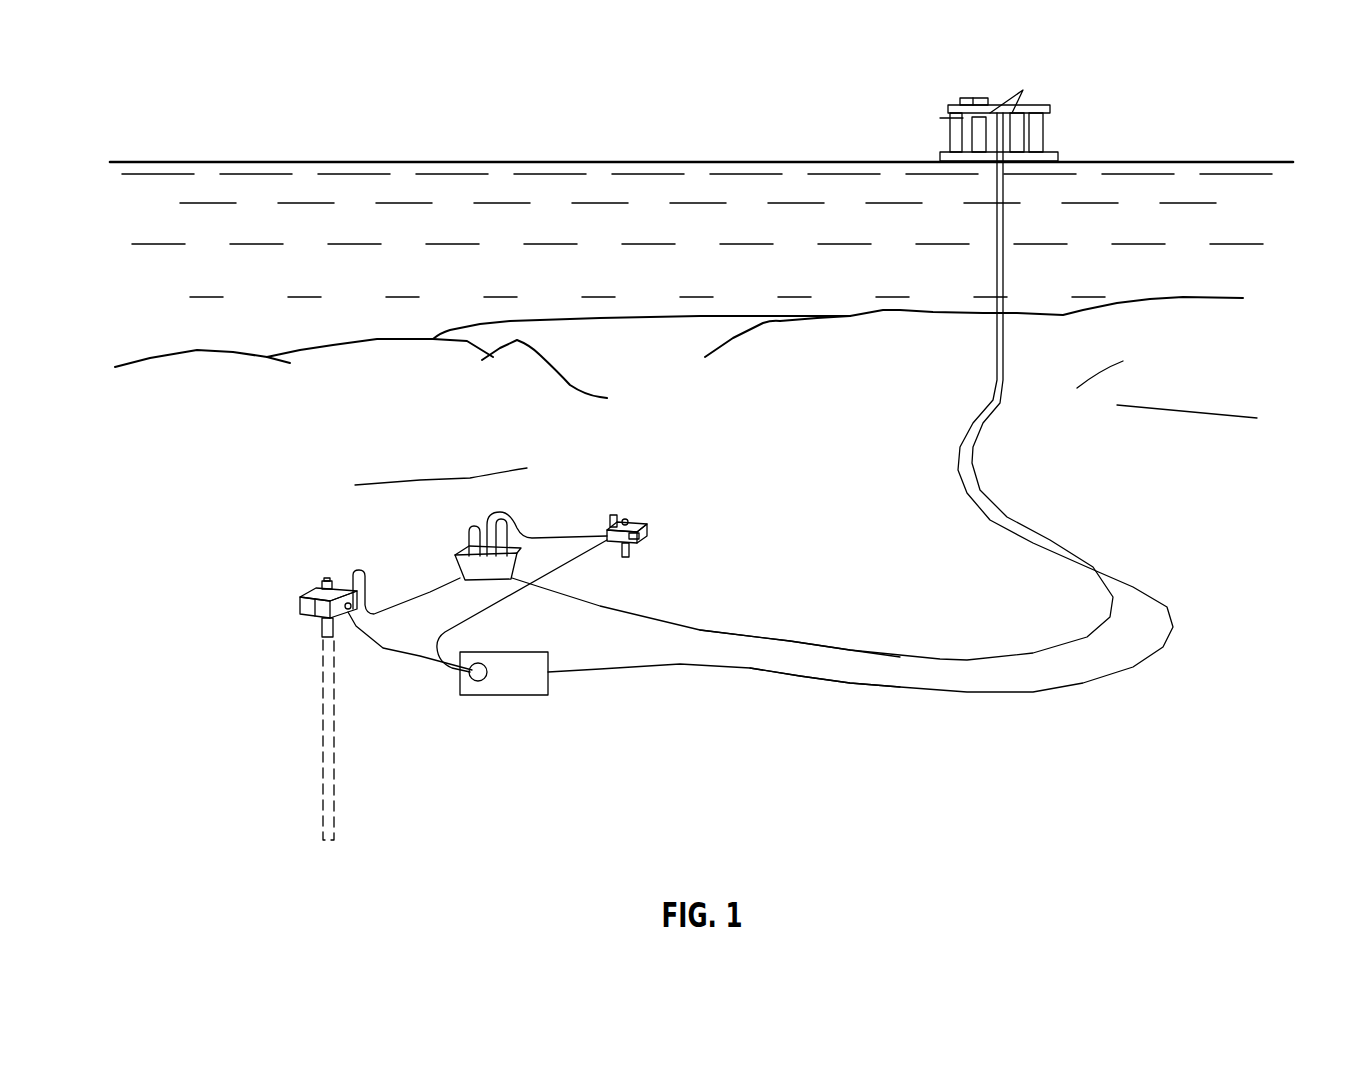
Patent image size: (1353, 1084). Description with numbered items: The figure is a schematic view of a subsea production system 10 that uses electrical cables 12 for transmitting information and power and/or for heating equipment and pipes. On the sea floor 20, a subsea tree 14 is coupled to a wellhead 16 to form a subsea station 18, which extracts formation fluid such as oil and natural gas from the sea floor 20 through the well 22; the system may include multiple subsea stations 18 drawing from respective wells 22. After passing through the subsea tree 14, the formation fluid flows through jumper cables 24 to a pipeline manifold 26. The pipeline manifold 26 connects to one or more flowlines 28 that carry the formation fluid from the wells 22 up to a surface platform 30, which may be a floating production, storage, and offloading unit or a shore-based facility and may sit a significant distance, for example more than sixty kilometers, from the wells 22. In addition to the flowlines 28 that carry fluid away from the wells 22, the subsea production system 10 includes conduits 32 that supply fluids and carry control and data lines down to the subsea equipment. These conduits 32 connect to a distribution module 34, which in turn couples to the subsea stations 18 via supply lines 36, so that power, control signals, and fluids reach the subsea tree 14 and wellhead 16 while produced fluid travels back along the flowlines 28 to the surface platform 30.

The subsea production system 10 is at (198, 102).
The electrical cables 12 is at (845, 650).
The subsea tree 14 is at (300, 606).
The wellhead 16 is at (318, 626).
The subsea station 18 is at (256, 544).
The sea floor 20 is at (1193, 528).
The well 22 is at (322, 813).
The jumper cables 24 is at (417, 598).
The pipeline manifold 26 is at (448, 512).
The flowlines 28 is at (790, 640).
The surface platform 30 is at (1043, 130).
The conduits 32 is at (920, 690).
The distribution module 34 is at (503, 696).
The supply lines 36 is at (408, 655).